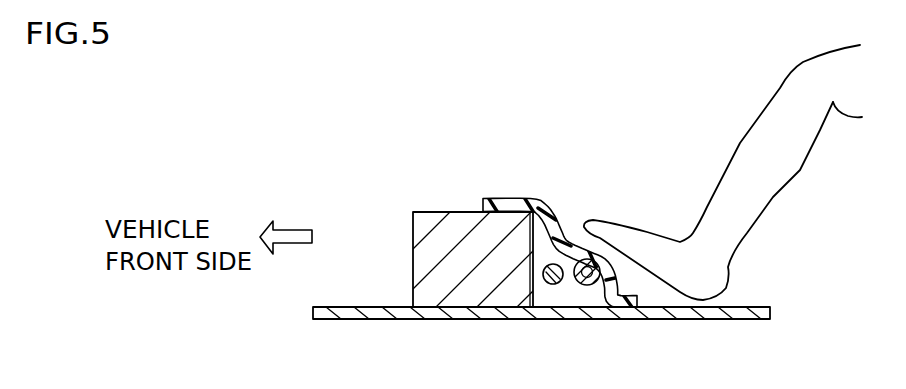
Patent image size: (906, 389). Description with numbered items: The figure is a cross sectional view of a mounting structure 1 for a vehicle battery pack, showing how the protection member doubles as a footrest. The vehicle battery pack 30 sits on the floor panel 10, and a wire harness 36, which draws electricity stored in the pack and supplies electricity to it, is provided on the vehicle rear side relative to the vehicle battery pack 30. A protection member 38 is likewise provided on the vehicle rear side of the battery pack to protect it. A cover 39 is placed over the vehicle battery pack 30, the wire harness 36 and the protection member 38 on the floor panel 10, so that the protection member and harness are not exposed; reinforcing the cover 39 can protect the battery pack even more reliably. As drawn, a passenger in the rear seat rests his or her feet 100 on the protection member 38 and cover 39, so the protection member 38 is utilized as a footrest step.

The mounting structure 1 is at (395, 130).
The floor panel 10 is at (365, 320).
The vehicle battery pack 30 is at (455, 228).
The wire harness 36 is at (553, 285).
The protection member 38 is at (588, 285).
The cover 39 is at (548, 208).
The feet 100 is at (763, 156).